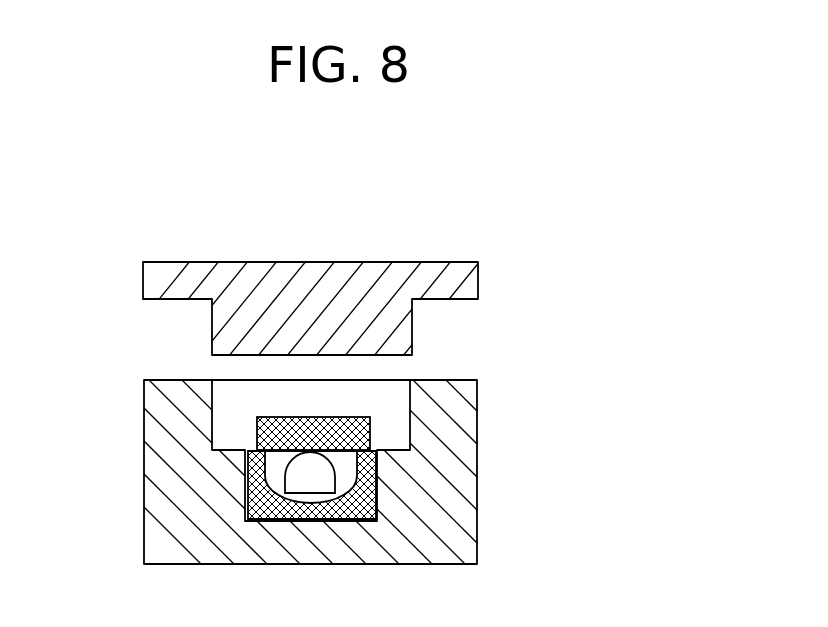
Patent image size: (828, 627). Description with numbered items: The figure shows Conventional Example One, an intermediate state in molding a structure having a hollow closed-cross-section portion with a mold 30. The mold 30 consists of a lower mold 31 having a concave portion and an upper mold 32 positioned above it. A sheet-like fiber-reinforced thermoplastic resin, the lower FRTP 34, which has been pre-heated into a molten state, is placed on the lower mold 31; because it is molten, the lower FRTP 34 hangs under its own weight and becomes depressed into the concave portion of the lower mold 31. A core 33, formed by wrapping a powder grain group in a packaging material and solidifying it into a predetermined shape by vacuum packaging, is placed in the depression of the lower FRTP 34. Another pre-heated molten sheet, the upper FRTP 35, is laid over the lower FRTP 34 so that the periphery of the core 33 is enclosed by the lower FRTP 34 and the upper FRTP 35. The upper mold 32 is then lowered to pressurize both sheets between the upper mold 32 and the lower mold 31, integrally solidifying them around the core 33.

The mold 30 is at (479, 337).
The lower mold 31 is at (478, 462).
The upper mold 32 is at (476, 261).
The core 33 is at (303, 477).
The lower FRTP 34 is at (262, 504).
The upper FRTP 35 is at (258, 417).